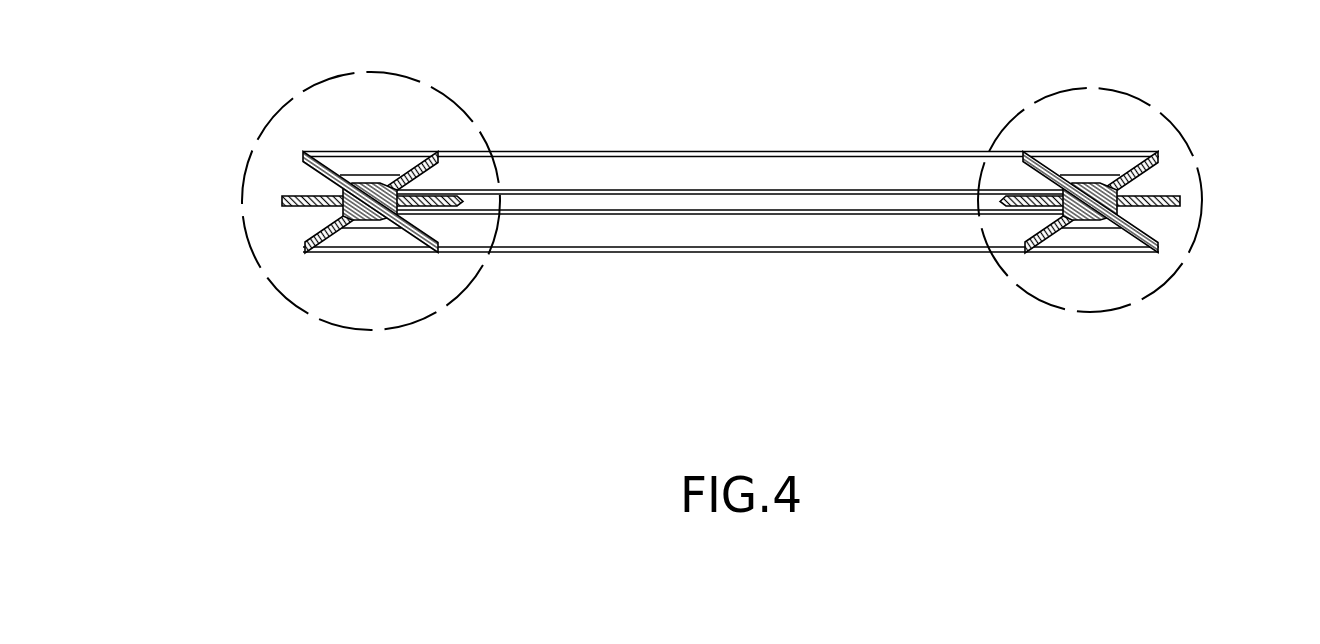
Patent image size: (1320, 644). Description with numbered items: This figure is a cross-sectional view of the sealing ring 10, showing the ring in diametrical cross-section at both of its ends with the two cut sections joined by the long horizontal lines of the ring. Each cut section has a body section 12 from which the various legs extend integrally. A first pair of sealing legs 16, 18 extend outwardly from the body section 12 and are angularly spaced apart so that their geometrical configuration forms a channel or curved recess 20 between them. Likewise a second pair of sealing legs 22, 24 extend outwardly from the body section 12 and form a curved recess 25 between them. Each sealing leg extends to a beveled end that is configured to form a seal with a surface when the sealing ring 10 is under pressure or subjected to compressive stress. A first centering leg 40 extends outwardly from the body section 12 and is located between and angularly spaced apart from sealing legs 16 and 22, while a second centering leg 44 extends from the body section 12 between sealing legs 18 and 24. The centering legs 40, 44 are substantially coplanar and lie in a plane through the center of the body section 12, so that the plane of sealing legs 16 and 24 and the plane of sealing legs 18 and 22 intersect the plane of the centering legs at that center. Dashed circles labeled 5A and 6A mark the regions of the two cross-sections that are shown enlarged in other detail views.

The sealing ring 10 is at (631, 151).
The body section 12 is at (1130, 190).
The sealing leg 16 is at (304, 153).
The sealing leg 18 is at (438, 156).
The curved recess 20 is at (371, 170).
The sealing leg 22 is at (307, 244).
The sealing leg 24 is at (418, 240).
The curved recess 25 is at (368, 240).
The first centering leg 40 is at (297, 198).
The second centering leg 44 is at (465, 204).
The detail view circle (FIG. 5A) 5A is at (373, 331).
The detail view circle (FIG. 6A) 6A is at (1090, 313).